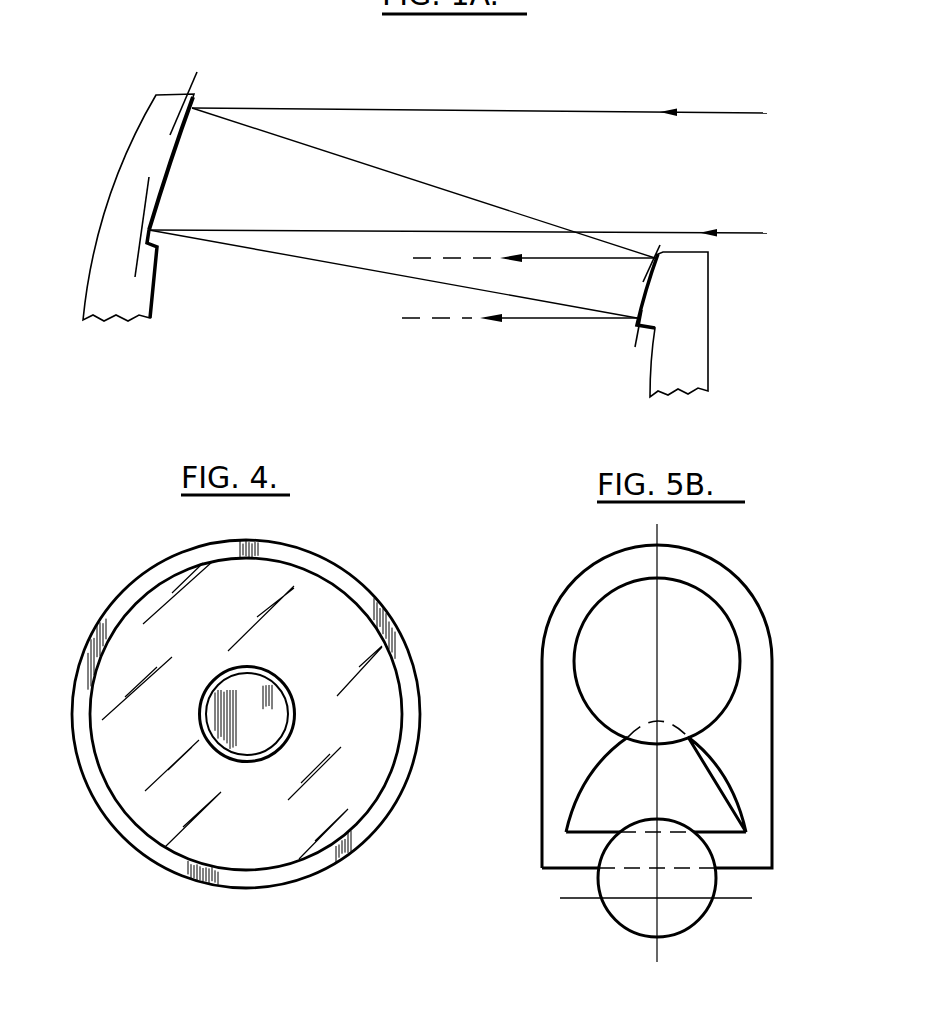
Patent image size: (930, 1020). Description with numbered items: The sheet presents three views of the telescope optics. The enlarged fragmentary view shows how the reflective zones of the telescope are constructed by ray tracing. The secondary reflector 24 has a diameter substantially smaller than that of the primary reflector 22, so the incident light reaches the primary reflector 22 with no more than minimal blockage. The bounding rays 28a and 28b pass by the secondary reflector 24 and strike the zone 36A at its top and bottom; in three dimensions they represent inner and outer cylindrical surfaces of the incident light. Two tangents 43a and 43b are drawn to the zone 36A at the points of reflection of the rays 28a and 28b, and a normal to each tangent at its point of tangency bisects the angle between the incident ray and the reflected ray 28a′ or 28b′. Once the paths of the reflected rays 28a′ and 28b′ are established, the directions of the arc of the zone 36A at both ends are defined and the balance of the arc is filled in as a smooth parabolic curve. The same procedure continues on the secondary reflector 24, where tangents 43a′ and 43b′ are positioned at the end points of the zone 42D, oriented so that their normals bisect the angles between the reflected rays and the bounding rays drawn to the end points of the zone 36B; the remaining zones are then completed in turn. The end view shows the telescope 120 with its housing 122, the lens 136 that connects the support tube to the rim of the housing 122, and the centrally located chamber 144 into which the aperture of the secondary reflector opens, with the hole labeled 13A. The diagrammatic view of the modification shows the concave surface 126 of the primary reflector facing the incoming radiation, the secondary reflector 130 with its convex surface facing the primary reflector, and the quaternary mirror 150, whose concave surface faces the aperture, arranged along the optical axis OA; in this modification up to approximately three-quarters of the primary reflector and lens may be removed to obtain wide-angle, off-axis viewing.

In FIG. 1A, the primary reflector 22 is at (123, 156).
In FIG. 1A, the secondary reflector 24 is at (711, 310).
In FIG. 1A, the zone 36A is at (167, 162).
In FIG. 1A, the zone 36B is at (154, 287).
In FIG. 1A, the zone 42D is at (647, 289).
In FIG. 1A, the tangent 43a is at (196, 83).
In FIG. 1A, the tangent 43b is at (143, 206).
In FIG. 1A, the tangent 43a′ is at (658, 253).
In FIG. 1A, the tangent 43b′ is at (632, 334).
In FIG. 1A, the bounding ray 28a is at (586, 111).
In FIG. 1A, the reflected ray 28a′ is at (367, 163).
In FIG. 1A, the bounding ray 28b is at (237, 229).
In FIG. 1A, the reflected ray 28b′ is at (331, 263).
In FIG. 4, the telescope 120 is at (248, 706).
In FIG. 4, the housing 122 is at (339, 566).
In FIG. 4, the lens 136 is at (350, 595).
In FIG. 5B, the lens 136 is at (599, 600).
In FIG. 4, the central aperture ring 13A is at (265, 671).
In FIG. 4, the chamber 144 is at (292, 729).
In FIG. 5B, the concave surface 126 is at (756, 553).
In FIG. 5B, the secondary reflector 130 is at (582, 780).
In FIG. 5B, the quaternary mirror 150 is at (692, 923).
In FIG. 5B, the optical axis OA is at (675, 901).